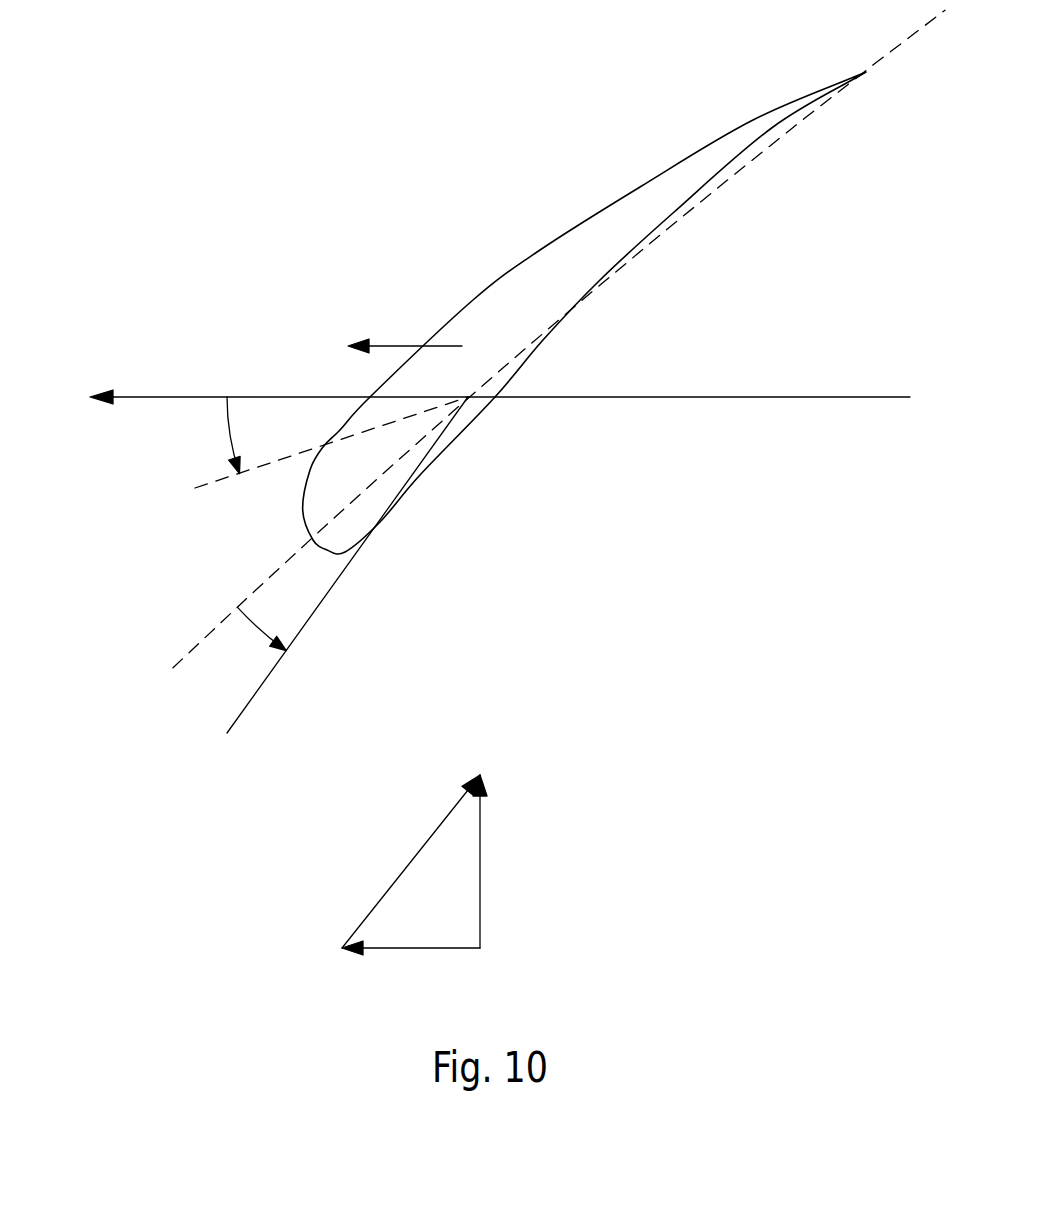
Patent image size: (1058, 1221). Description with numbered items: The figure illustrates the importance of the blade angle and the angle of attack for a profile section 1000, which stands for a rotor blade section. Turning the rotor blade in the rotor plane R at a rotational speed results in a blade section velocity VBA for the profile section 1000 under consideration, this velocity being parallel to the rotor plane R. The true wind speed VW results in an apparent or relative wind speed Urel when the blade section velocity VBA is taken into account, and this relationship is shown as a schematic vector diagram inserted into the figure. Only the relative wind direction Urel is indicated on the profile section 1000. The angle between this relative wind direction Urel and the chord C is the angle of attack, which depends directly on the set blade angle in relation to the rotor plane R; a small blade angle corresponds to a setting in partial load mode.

The profile section 1000 is at (511, 184).
The chord C is at (908, 42).
The rotor plane R is at (645, 397).
The relative wind speed Urel is at (317, 615).
The blade section velocity VBA is at (411, 645).
The true wind speed VW is at (502, 861).